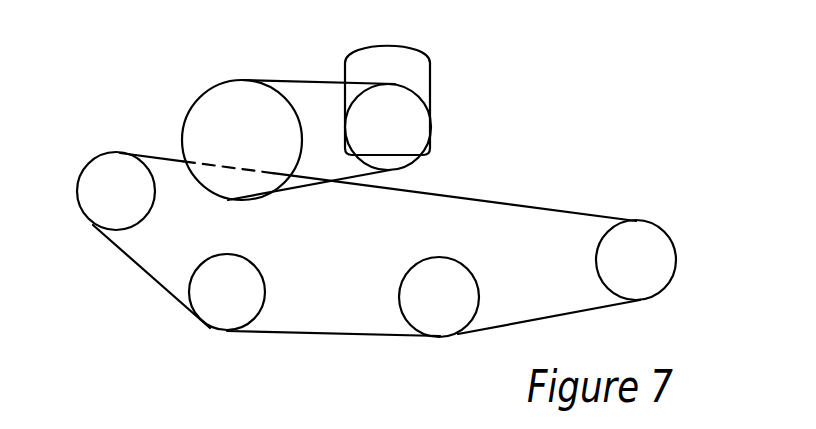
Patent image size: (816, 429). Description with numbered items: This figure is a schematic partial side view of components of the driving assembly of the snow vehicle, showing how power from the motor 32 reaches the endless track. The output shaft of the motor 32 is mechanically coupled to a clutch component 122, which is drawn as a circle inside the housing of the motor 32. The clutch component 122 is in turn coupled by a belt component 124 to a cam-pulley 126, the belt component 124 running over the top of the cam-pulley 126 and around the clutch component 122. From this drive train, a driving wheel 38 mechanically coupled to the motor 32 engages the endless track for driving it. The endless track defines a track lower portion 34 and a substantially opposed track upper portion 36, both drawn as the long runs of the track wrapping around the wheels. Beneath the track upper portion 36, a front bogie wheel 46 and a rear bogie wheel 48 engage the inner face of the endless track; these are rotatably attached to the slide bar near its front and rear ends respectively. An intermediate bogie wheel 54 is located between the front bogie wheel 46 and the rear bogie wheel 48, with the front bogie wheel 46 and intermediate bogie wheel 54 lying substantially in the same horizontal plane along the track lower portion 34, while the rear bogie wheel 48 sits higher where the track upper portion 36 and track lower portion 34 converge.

The cam-pulley 126 is at (255, 89).
The belt component 124 is at (307, 82).
The motor 32 is at (421, 74).
The clutch component 122 is at (432, 102).
The track upper portion 36 is at (509, 204).
The driving wheel 38 is at (104, 226).
The front bogie wheel 46 is at (240, 327).
The track lower portion 34 is at (343, 335).
The intermediate bogie wheel 54 is at (458, 326).
The rear bogie wheel 48 is at (664, 285).